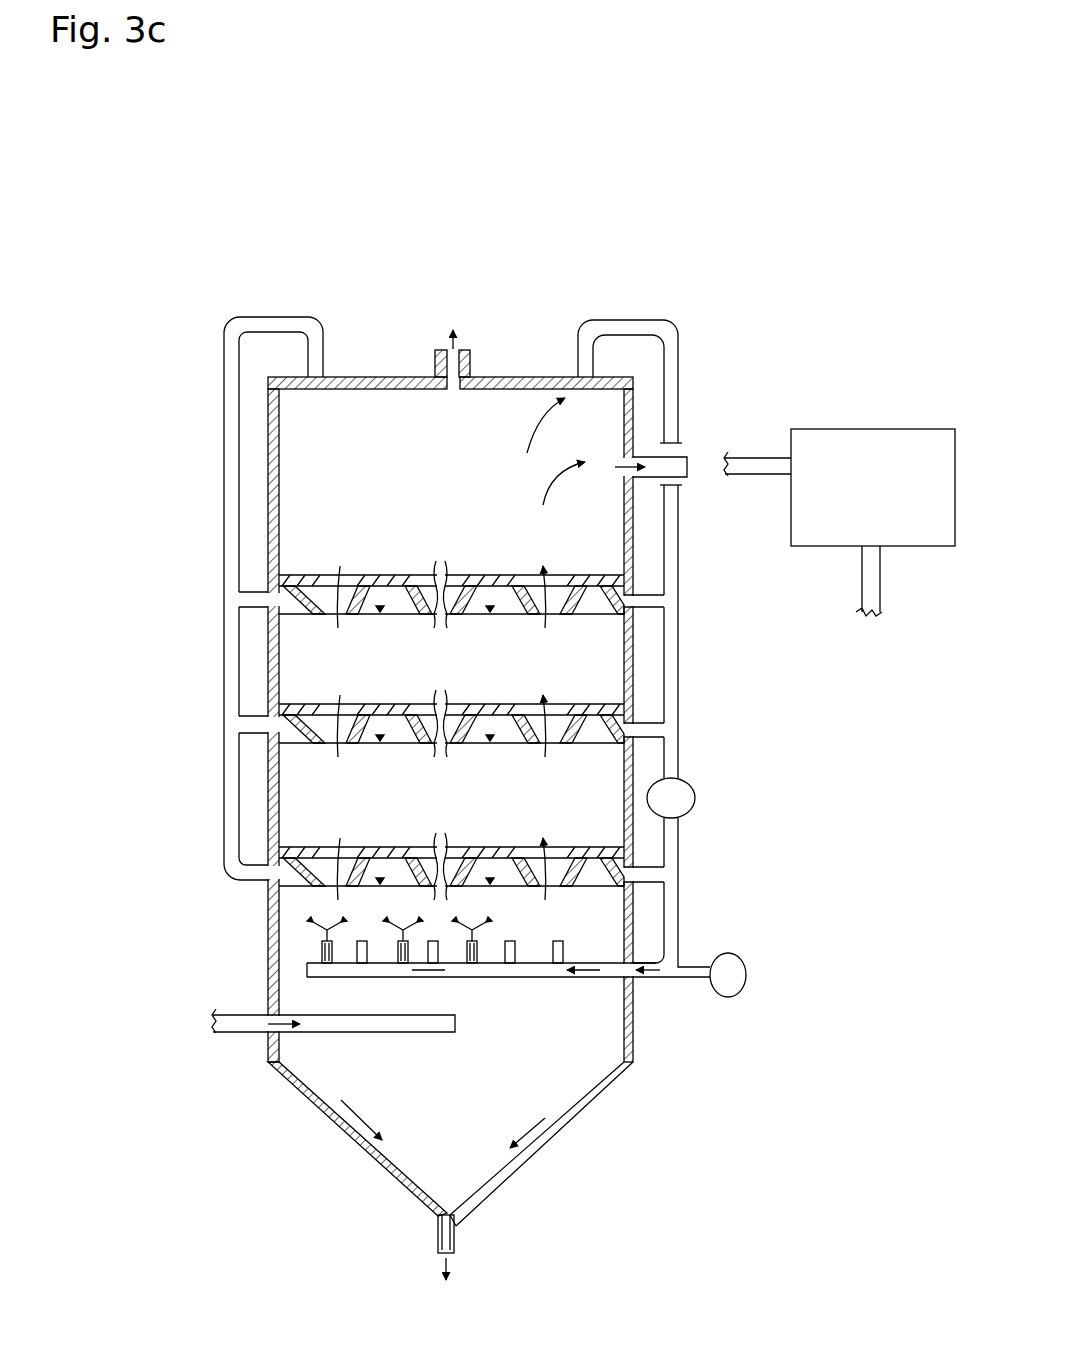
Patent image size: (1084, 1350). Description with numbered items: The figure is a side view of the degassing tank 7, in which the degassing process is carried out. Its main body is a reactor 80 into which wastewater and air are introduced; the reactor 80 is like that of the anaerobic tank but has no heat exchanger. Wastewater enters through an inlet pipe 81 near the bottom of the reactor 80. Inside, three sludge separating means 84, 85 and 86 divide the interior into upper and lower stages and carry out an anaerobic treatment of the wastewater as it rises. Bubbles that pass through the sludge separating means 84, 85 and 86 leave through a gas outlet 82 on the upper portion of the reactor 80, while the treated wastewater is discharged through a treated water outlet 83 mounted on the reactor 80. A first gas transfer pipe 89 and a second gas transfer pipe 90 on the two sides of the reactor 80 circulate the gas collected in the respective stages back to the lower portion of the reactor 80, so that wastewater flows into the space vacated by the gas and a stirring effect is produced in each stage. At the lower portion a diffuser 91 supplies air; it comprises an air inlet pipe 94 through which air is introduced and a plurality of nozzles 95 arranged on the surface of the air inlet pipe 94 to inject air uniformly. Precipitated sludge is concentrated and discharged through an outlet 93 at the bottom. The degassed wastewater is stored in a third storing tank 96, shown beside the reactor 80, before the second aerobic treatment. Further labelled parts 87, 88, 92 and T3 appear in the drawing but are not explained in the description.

The degassing tank 7 is at (690, 335).
The reactor 80 is at (646, 650).
The inlet pipe 81 is at (226, 1045).
The gas outlet 82 is at (462, 350).
The treated water outlet 83 is at (688, 460).
The sludge separating means 84 is at (293, 868).
The sludge separating means 85 is at (303, 730).
The sludge separating means 86 is at (313, 553).
The downcomer pipe 87 is at (218, 640).
The circulation pump 88 is at (688, 755).
The first gas transfer pipe 89 is at (278, 322).
The second gas transfer pipe 90 is at (612, 335).
The diffuser 91 is at (703, 962).
The supply pipe 92 is at (672, 848).
The outlet 93 is at (455, 1245).
The air inlet pipe 94 is at (307, 970).
The nozzles 95 is at (320, 950).
The third storing tank 96 is at (862, 435).
The temperature sensor T3 is at (873, 612).